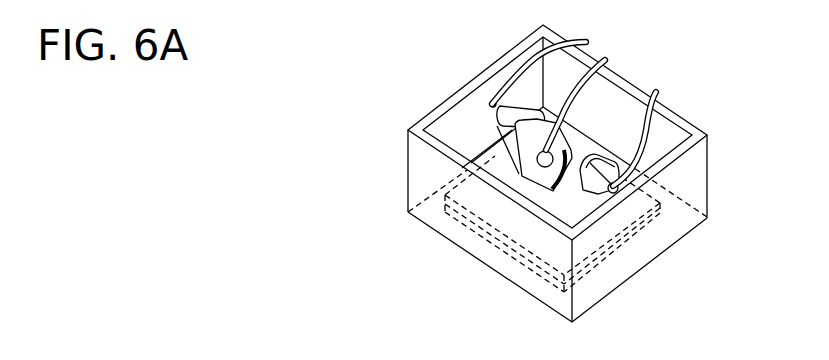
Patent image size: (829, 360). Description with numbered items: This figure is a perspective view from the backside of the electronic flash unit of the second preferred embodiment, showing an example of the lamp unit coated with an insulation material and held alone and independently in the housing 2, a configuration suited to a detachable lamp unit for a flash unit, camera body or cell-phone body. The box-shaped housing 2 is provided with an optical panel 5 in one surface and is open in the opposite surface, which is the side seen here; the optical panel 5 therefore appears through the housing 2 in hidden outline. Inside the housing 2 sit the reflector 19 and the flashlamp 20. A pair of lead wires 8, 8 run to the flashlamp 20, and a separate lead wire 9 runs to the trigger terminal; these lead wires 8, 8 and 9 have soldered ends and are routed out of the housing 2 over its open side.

The housing 2 is at (686, 237).
The optical panel 5 is at (505, 253).
The lead wires 8 is at (570, 41).
The lead wire 9 is at (610, 62).
The reflector 19 is at (574, 206).
The flashlamp 20 is at (512, 118).